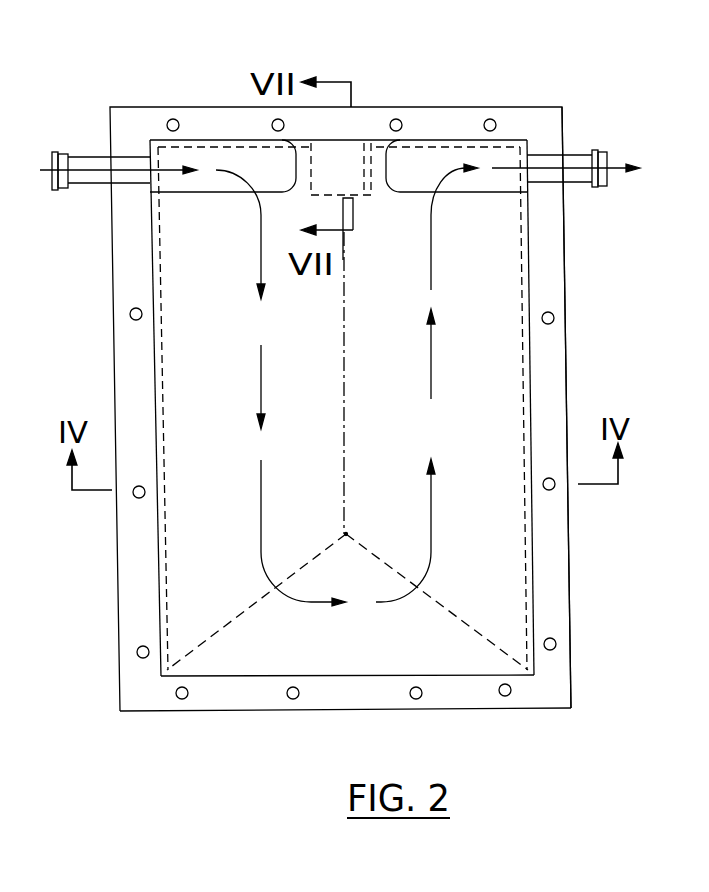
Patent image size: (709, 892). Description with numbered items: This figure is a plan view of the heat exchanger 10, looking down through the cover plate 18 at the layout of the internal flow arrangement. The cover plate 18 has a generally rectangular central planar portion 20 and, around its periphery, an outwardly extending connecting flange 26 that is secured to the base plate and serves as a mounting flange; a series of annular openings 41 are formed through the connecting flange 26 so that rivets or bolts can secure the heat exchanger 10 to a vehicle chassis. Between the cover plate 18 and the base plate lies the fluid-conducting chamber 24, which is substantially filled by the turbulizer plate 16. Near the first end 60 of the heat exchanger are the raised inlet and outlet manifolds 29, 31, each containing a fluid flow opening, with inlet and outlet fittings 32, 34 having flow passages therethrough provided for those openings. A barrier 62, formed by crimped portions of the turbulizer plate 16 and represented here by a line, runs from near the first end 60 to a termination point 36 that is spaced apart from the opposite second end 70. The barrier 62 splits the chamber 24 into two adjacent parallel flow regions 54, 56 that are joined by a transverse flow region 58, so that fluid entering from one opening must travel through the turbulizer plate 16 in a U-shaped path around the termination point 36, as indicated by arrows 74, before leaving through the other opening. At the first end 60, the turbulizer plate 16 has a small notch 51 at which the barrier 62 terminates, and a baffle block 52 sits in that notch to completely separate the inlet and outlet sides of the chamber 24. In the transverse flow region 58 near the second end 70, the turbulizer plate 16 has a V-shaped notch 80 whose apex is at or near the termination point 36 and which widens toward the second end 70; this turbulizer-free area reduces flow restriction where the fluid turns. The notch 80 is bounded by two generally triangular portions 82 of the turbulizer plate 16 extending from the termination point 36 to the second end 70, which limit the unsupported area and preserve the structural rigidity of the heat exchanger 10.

The heat exchanger 10 is at (600, 78).
The turbulizer plate 16 is at (527, 366).
The cover plate 18 is at (505, 248).
The central planar portion 20 is at (492, 310).
The fluid-conducting chamber 24 is at (180, 280).
The connecting flange 26 is at (553, 580).
The inlet manifold 29 is at (197, 148).
The outlet manifold 31 is at (506, 150).
The inlet fitting 32 is at (93, 156).
The outlet fitting 34 is at (577, 153).
The termination point 36 is at (348, 534).
The openings 41 is at (558, 644).
The notch 51 is at (365, 197).
The baffle block 52 is at (360, 150).
The flow region 54 is at (178, 537).
The flow region 56 is at (500, 545).
The transverse flow region 58 is at (356, 582).
The first end 60 is at (380, 148).
The barrier 62 is at (345, 411).
The second end 70 is at (470, 707).
The arrows 74 is at (258, 365).
The V-shaped notch 80 is at (268, 656).
The triangular portions 82 is at (188, 597).